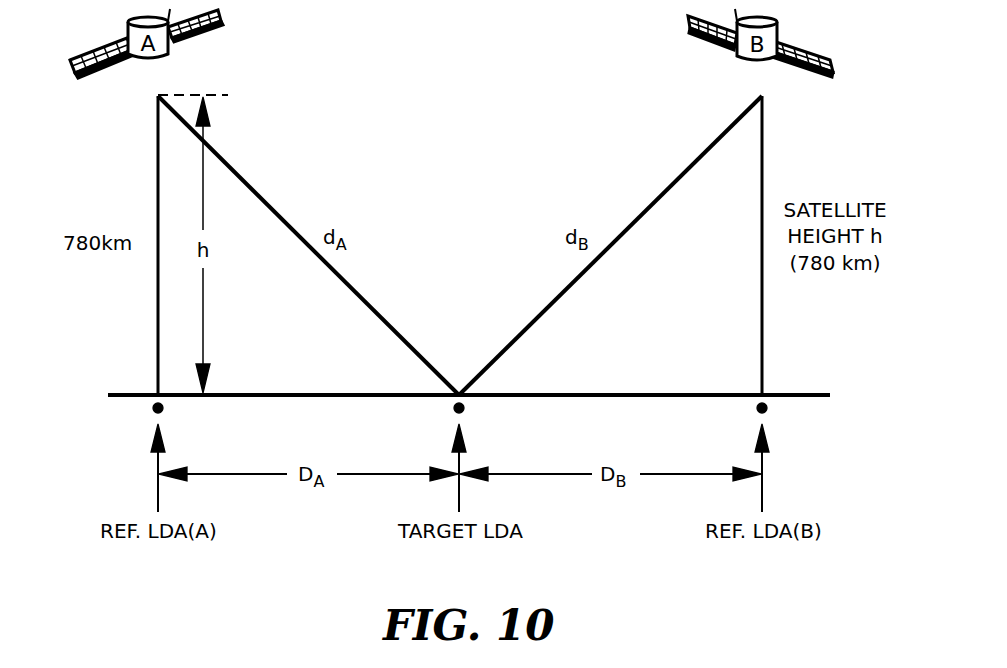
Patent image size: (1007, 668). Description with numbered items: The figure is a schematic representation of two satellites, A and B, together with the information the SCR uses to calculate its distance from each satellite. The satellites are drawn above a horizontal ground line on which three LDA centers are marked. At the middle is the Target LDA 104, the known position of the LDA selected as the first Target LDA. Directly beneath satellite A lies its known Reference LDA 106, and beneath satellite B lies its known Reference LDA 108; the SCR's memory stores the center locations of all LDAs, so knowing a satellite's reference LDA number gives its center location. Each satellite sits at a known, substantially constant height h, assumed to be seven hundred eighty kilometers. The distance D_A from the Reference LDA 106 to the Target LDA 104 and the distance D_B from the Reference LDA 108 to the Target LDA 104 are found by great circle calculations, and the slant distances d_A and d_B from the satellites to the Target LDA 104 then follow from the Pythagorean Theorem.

The Target LDA 104 is at (454, 408).
The Reference LDA of satellite A 106 is at (153, 408).
The Reference LDA of satellite B 108 is at (757, 408).